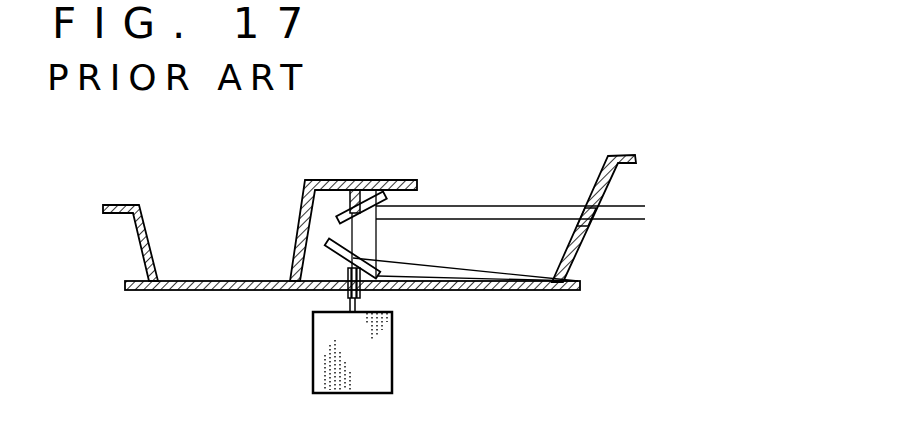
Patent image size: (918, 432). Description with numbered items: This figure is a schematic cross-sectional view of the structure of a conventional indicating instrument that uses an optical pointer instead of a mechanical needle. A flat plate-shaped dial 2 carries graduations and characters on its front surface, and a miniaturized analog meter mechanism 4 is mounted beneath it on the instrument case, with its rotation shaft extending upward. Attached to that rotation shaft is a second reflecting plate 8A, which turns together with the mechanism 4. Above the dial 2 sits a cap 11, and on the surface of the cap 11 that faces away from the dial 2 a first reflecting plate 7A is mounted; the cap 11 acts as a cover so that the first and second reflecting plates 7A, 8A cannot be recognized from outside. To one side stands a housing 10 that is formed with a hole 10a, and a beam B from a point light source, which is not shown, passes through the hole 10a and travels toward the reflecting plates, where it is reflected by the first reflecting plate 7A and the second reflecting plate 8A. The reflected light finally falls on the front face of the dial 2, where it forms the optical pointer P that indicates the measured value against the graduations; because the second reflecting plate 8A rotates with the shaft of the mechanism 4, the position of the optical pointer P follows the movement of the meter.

The dial 2 is at (198, 290).
The mechanism 4 is at (388, 355).
The first reflecting plate 7A is at (372, 188).
The second reflecting plate 8A is at (336, 243).
The housing 10 is at (597, 177).
The hole 10a is at (587, 222).
The cap 11 is at (415, 180).
The beam B is at (502, 210).
The optical pointer P is at (475, 280).